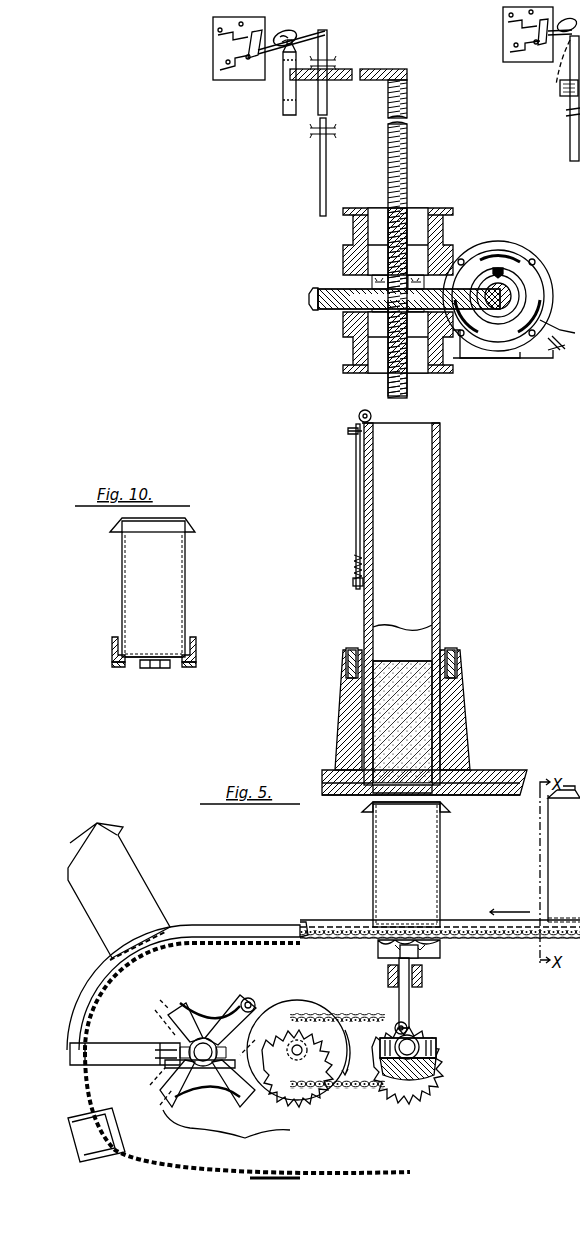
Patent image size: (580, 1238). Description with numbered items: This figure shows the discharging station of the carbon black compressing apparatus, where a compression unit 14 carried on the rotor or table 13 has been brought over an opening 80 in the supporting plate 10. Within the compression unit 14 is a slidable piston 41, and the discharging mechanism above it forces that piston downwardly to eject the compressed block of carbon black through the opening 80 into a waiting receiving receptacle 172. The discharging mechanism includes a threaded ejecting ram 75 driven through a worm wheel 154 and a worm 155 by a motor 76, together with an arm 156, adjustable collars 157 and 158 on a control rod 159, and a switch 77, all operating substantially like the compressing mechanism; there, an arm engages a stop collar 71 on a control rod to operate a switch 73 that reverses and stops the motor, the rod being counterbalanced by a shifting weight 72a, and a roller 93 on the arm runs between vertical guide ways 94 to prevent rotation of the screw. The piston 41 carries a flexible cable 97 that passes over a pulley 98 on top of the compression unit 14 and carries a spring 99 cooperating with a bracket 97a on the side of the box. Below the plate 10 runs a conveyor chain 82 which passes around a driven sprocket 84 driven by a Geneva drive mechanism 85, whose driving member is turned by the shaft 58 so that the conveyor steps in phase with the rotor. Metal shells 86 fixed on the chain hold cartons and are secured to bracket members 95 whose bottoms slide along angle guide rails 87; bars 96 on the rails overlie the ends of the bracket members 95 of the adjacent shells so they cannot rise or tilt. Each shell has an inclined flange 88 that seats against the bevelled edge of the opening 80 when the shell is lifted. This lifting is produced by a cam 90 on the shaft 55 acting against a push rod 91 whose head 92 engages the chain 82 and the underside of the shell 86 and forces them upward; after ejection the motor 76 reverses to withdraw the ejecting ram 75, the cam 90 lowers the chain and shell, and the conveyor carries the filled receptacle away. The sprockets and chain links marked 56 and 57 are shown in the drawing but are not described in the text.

In FIG. 5, the switch 77 is at (243, 80).
In FIG. 5, the adjustable collar 157 is at (328, 60).
In FIG. 5, the arm 156 is at (368, 69).
In FIG. 5, the adjustable collar 158 is at (310, 136).
In FIG. 5, the control rod 159 is at (325, 172).
In FIG. 5, the threaded ejecting ram 75 is at (408, 162).
In FIG. 5, the motor 76 is at (485, 243).
In FIG. 5, the worm wheel 154 is at (325, 312).
In FIG. 5, the worm 155 is at (499, 310).
In FIG. 5, the switch 73 is at (523, 62).
In FIG. 5, the shifting weight 72a is at (542, 72).
In FIG. 5, the roller 93 is at (568, 97).
In FIG. 5, the vertical guide ways 94 is at (566, 112).
In FIG. 5, the collar or stop 71 is at (569, 104).
In FIG. 5, the pulley 98 is at (358, 413).
In FIG. 5, the bracket 97a is at (348, 433).
In FIG. 5, the flexible cable 97 is at (375, 466).
In FIG. 5, the spring 99 is at (356, 562).
In FIG. 5, the compression unit 14 is at (440, 572).
In FIG. 5, the piston 41 is at (422, 635).
In FIG. 5, the rotor or table 13 is at (508, 770).
In FIG. 5, the plate 10 is at (492, 795).
In FIG. 5, the opening 80 is at (380, 790).
In FIG. 5, the receiving receptacle 172 is at (400, 805).
In FIG. 5, the inclined flange 88 is at (445, 812).
In FIG. 10, the inclined flange 88 is at (197, 524).
In FIG. 5, the metal shell 86 is at (442, 872).
In FIG. 10, the metal shell 86 is at (160, 577).
In FIG. 5, the chain 82 is at (492, 940).
In FIG. 10, the chain 82 is at (157, 668).
In FIG. 5, the head 92 is at (378, 968).
In FIG. 5, the push rod 91 is at (410, 1003).
In FIG. 5, the sprocket 56 is at (425, 1034).
In FIG. 5, the shaft 55 is at (414, 1058).
In FIG. 5, the cam 90 is at (398, 1075).
In FIG. 5, the chain 57 is at (376, 1089).
In FIG. 5, the shaft 58 is at (300, 1058).
In FIG. 5, the Geneva drive mechanism 85 is at (260, 1000).
In FIG. 5, the driven sprocket 84 is at (185, 955).
In FIG. 10, the bar 96 is at (198, 643).
In FIG. 10, the angle guide rail 87 is at (188, 668).
In FIG. 10, the bracket member 95 is at (170, 660).